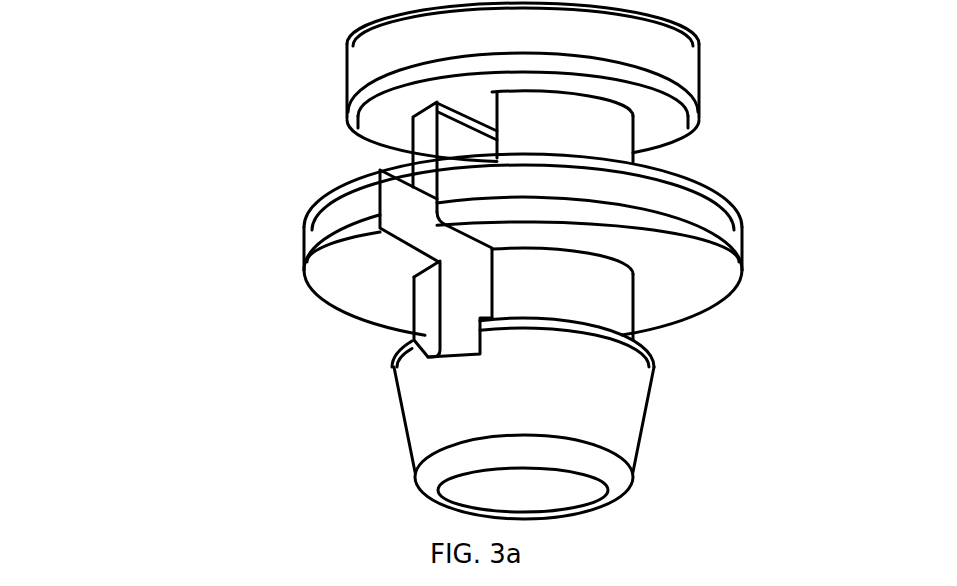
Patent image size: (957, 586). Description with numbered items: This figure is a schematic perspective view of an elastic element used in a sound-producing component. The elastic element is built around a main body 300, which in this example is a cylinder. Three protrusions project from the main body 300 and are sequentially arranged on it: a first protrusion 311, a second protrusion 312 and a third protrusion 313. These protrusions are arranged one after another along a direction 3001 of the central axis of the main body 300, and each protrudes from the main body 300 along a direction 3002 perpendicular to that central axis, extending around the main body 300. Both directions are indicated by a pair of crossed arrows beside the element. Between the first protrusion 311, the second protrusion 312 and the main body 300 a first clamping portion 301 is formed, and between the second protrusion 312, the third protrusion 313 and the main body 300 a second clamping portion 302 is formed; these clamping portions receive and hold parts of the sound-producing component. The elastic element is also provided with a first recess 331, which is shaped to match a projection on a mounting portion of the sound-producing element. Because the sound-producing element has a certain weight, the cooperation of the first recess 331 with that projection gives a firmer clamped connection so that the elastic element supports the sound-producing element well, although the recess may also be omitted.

The main body 300 is at (592, 306).
The first clamping portion 301 is at (711, 158).
The second clamping portion 302 is at (717, 321).
The first protrusion 311 is at (601, 26).
The second protrusion 312 is at (709, 216).
The third protrusion 313 is at (577, 380).
The first recess 331 is at (457, 284).
The direction of a central axis of the main body 3001 is at (168, 215).
The direction perpendicular to the central axis of the main body 3002 is at (246, 115).